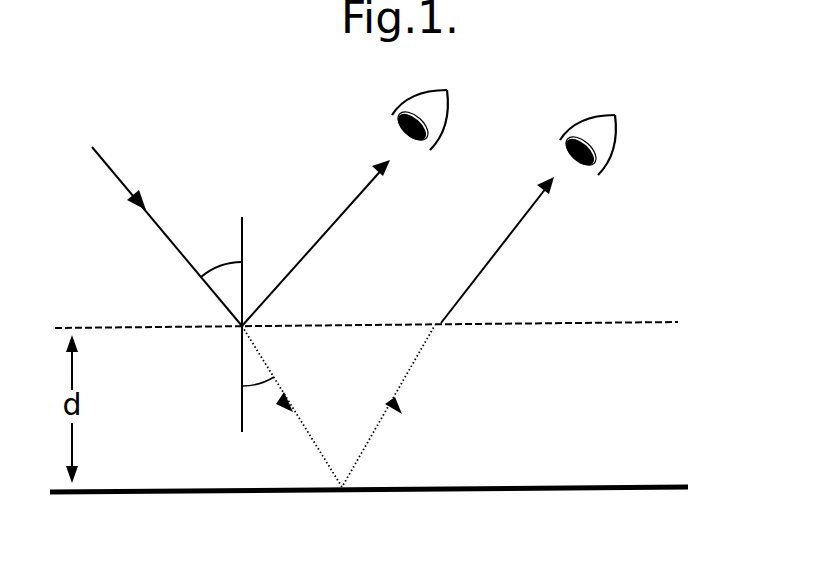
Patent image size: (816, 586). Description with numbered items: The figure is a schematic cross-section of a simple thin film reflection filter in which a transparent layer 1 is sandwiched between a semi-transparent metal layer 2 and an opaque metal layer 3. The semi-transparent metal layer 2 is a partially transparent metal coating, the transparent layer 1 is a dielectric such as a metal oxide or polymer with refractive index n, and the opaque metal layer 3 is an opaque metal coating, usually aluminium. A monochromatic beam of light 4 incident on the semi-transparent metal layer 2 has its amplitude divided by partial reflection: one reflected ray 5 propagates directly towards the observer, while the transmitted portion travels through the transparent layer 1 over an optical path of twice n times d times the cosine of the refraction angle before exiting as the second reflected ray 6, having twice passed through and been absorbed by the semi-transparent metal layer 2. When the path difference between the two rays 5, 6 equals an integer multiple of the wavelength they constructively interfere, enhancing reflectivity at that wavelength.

The transparent layer 1 is at (538, 442).
The semi-transparent metal layer 2 is at (643, 322).
The opaque metal layer 3 is at (565, 488).
The monochromatic beam of light 4 is at (112, 171).
The reflected ray 5 is at (345, 210).
The reflected ray 6 is at (512, 231).